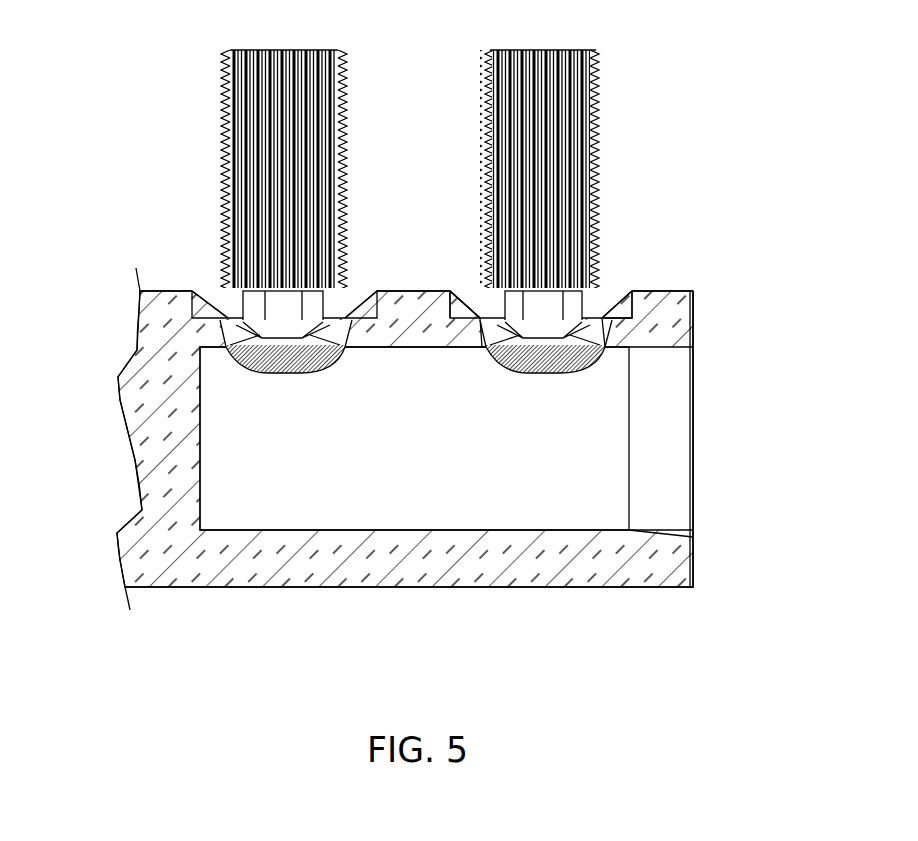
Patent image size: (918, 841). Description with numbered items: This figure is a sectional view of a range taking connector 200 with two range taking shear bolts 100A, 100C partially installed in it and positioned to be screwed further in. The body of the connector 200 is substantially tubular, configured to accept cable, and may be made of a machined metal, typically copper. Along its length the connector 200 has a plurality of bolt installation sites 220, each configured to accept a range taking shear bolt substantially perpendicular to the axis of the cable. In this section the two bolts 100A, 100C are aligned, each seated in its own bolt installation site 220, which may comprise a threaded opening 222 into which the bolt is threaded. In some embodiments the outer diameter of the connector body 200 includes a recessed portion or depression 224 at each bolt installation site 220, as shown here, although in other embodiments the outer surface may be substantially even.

The range taking connector 200 is at (370, 588).
The bolt installation site 220 is at (462, 278).
The threaded opening 222 is at (600, 327).
The recessed portion/depression 224 is at (618, 318).
The range taking shear bolt 100A is at (603, 101).
The range taking shear bolt 100C is at (222, 152).